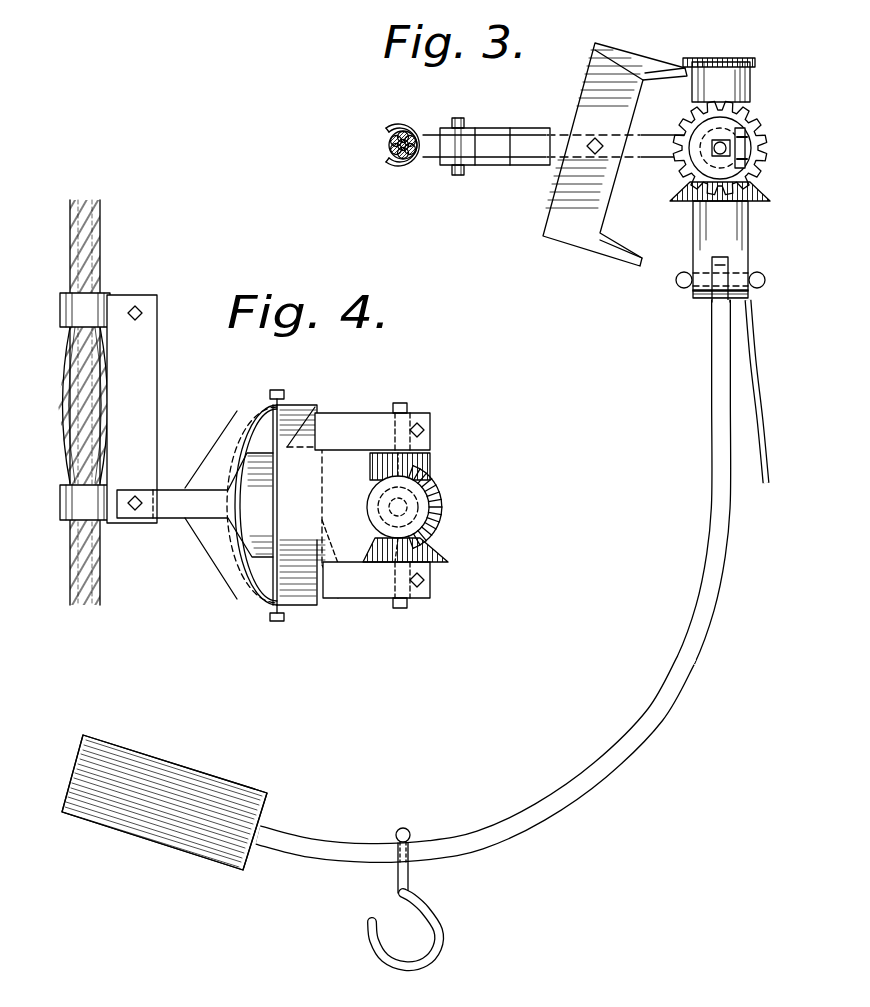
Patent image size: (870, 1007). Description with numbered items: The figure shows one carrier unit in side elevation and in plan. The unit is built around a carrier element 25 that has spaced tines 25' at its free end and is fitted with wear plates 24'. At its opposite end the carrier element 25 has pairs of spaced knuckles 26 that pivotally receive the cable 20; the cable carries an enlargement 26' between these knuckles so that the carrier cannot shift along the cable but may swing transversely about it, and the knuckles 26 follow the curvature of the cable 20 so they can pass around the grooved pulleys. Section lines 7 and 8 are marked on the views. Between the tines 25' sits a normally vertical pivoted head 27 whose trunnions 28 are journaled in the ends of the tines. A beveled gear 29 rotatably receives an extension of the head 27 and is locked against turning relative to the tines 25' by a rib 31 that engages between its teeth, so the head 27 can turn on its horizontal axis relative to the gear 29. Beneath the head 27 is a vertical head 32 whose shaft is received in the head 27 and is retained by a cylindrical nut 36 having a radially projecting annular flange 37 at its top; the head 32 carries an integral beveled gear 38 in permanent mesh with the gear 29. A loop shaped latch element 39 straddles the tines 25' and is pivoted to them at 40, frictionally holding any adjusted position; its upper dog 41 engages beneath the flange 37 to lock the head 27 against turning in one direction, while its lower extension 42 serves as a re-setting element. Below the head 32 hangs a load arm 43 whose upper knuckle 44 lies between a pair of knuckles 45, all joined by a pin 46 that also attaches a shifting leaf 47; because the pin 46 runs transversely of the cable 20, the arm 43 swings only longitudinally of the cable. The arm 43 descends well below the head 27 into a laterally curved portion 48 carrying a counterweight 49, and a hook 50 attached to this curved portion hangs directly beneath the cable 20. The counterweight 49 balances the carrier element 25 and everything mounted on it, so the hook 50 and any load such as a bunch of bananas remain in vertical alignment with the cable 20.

In FIG. 4, the section line 7- 7 is at (85, 502).
In FIG. 3, the section line 8- 8 is at (385, 145).
In FIG. 3, the cable 20 is at (392, 166).
In FIG. 4, the cable 20 is at (100, 225).
In FIG. 3, the wear plates 24' is at (581, 149).
In FIG. 4, the wear plates 24' is at (167, 409).
In FIG. 4, the carrier element 25 is at (213, 505).
In FIG. 4, the tines 25' is at (372, 504).
In FIG. 3, the knuckles 26 is at (390, 127).
In FIG. 4, the knuckles 26 is at (111, 293).
In FIG. 4, the enlargement 26' is at (137, 405).
In FIG. 4, the pivoted head 27 is at (415, 468).
In FIG. 3, the trunnions 28 is at (745, 146).
In FIG. 4, the trunnions 28 is at (408, 406).
In FIG. 3, the beveled gear 29 is at (762, 165).
In FIG. 4, the beveled gear 29 is at (442, 546).
In FIG. 4, the rib 31 is at (262, 560).
In FIG. 3, the vertical head 32 is at (740, 228).
In FIG. 3, the cylindrical nut 36 is at (752, 82).
In FIG. 3, the annular flange 37 is at (725, 58).
In FIG. 4, the annular flange 37 is at (440, 524).
In FIG. 3, the beveled gear 38 is at (770, 196).
In FIG. 4, the beveled gear 38 is at (440, 490).
In FIG. 3, the latch element 39 is at (590, 102).
In FIG. 4, the latch element 39 is at (300, 428).
In FIG. 3, the pivot 40 is at (604, 152).
In FIG. 4, the pivot 40 is at (276, 378).
In FIG. 3, the dog 41 is at (668, 78).
In FIG. 4, the dog 41 is at (348, 582).
In FIG. 3, the extension 42 is at (626, 256).
In FIG. 3, the load arm 43 is at (743, 544).
In FIG. 3, the knuckle 44 is at (712, 303).
In FIG. 3, the knuckles 45 is at (730, 263).
In FIG. 3, the pin 46 is at (762, 284).
In FIG. 3, the shifting leaf 47 is at (764, 393).
In FIG. 3, the curved portion 48 is at (513, 818).
In FIG. 3, the counterweight 49 is at (166, 832).
In FIG. 3, the hook 50 is at (400, 965).